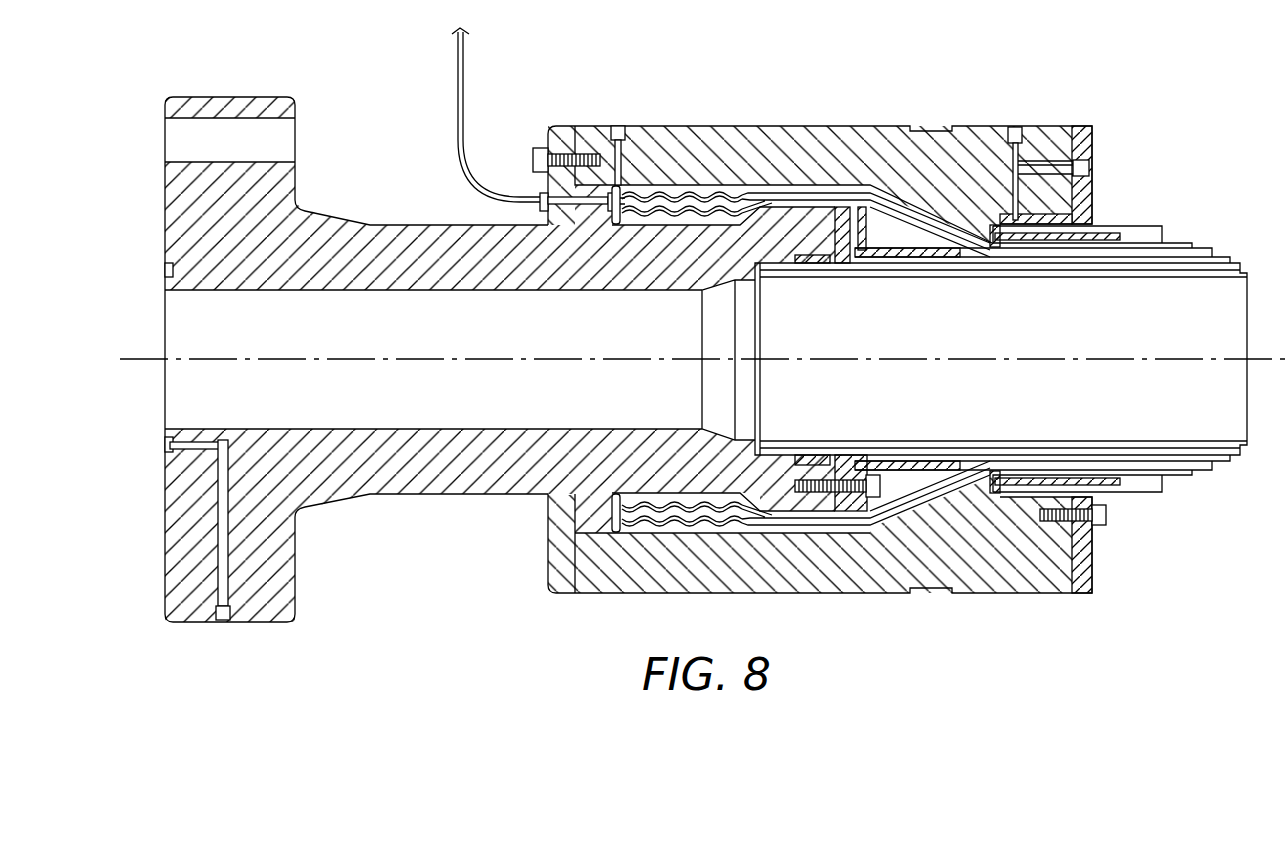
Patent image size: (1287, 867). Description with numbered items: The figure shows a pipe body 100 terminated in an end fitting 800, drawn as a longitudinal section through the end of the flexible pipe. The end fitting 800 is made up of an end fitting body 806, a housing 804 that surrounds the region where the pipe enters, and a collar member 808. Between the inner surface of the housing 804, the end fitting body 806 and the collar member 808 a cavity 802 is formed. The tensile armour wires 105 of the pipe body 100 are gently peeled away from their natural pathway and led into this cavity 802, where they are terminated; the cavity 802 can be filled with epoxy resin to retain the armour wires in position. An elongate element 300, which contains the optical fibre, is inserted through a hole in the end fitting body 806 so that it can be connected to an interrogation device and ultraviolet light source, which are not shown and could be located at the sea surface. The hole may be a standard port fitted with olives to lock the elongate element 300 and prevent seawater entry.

The pipe body 100 is at (1230, 484).
The tensile armour wires 105 is at (915, 505).
The elongate element 300 is at (456, 95).
The end fitting 800 is at (545, 616).
The cavity 802 is at (893, 197).
The housing 804 is at (808, 126).
The end fitting body 806 is at (410, 222).
The collar member 808 is at (935, 247).